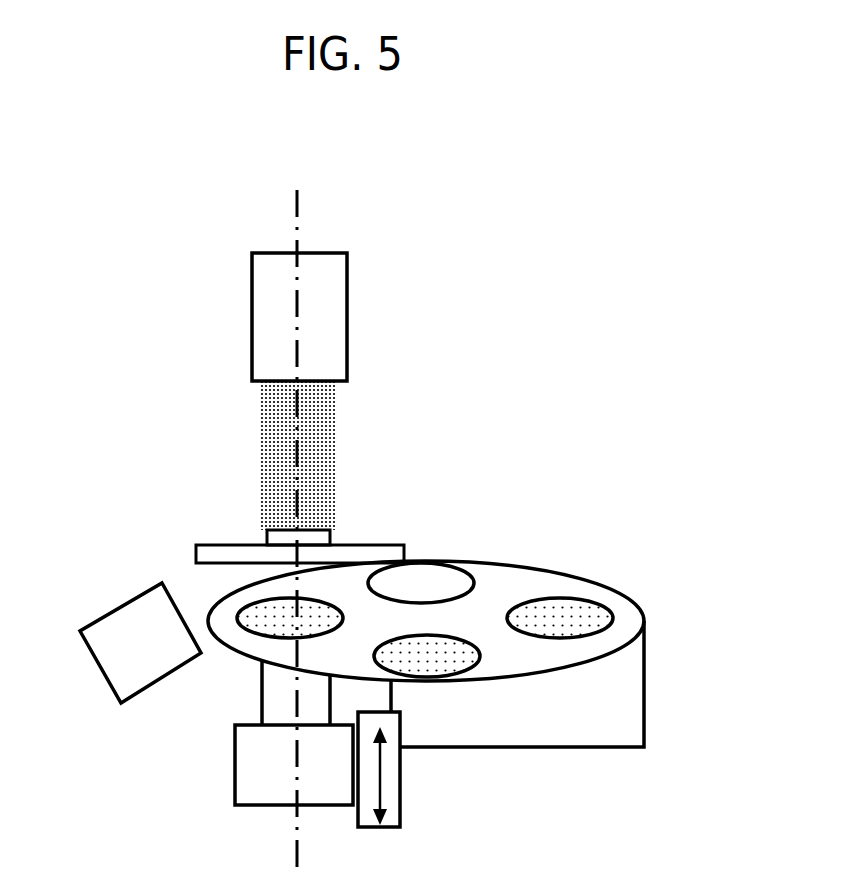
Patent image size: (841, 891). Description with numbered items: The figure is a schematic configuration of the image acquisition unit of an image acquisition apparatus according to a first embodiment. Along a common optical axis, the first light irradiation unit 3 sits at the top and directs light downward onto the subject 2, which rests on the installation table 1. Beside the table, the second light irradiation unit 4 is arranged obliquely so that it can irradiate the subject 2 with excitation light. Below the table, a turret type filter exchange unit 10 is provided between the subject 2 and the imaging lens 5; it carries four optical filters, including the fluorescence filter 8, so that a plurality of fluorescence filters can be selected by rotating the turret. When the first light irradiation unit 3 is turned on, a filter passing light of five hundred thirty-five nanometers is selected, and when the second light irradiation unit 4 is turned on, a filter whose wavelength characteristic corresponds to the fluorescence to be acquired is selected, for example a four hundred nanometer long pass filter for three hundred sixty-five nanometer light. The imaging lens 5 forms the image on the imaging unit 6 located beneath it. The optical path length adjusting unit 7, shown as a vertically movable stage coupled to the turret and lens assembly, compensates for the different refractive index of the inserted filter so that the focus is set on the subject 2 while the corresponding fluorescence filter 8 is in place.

The installation table 1 is at (194, 552).
The subject 2 is at (332, 530).
The first light irradiation unit 3 is at (347, 297).
The second light irradiation unit 4 is at (93, 658).
The imaging lens 5 is at (262, 688).
The imaging unit 6 is at (235, 791).
The optical path length adjusting unit 7 is at (400, 797).
The fluorescence filter 8 is at (575, 607).
The turret type filter exchange unit 10 is at (510, 560).